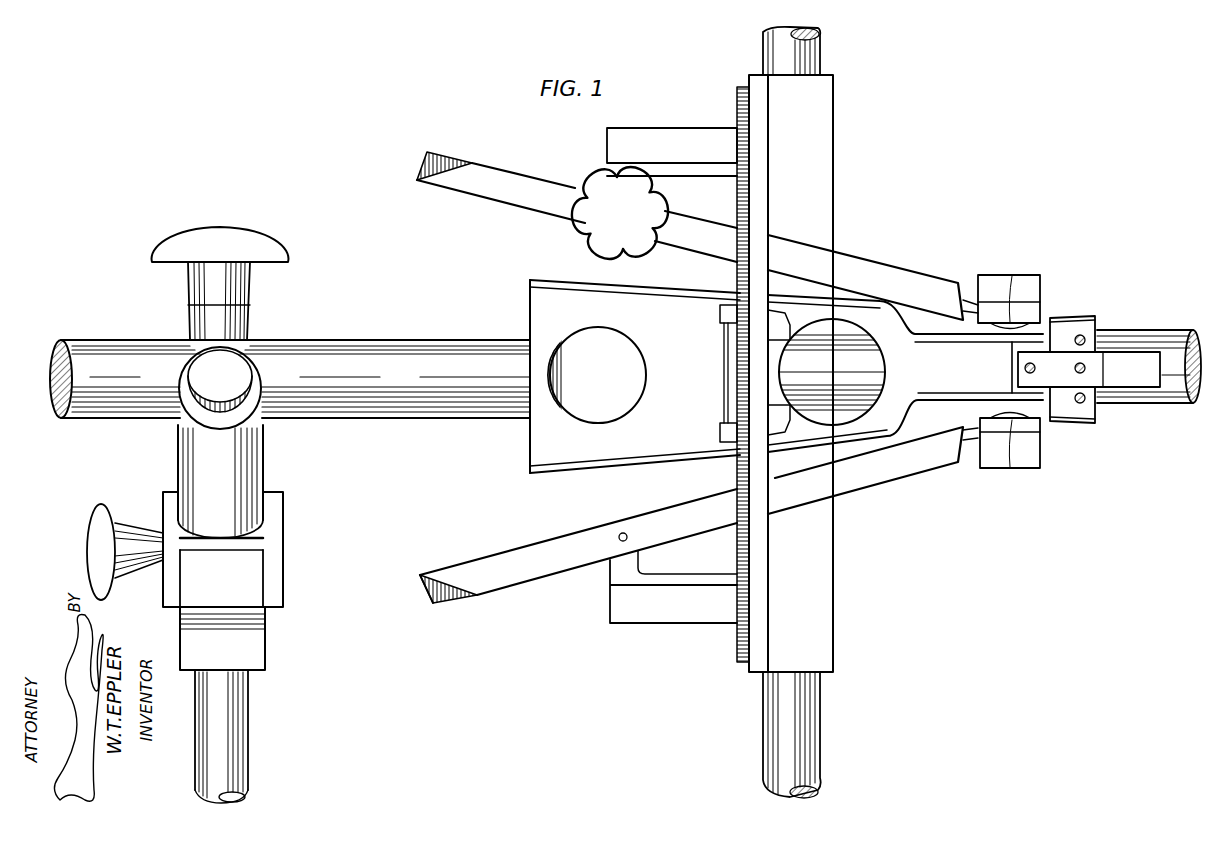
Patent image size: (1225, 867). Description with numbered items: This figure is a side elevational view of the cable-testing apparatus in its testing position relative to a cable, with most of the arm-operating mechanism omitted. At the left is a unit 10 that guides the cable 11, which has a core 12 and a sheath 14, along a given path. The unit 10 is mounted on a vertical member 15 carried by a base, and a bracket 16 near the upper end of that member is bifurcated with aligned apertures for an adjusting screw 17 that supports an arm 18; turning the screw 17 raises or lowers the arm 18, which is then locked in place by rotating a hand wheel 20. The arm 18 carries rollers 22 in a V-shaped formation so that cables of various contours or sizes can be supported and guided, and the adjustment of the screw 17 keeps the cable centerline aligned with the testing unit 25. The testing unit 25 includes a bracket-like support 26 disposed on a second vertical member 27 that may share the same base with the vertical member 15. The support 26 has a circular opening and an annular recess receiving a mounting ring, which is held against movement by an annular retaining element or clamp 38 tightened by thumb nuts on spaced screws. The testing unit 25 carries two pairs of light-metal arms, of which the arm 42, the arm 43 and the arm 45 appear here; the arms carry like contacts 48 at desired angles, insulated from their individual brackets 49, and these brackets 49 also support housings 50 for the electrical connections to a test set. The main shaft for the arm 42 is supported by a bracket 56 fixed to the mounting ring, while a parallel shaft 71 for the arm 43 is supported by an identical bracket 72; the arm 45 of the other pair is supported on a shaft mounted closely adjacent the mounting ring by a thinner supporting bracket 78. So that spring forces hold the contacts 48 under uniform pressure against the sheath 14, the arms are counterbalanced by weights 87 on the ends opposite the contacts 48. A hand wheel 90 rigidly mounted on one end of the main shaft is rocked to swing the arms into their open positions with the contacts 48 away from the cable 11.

The unit 10 is at (140, 257).
The cable 11 is at (352, 334).
The core 12 is at (62, 358).
The sheath 14 is at (133, 347).
The vertical member 15 is at (238, 755).
The bracket 16 is at (255, 653).
The adjusting screw 17 is at (237, 325).
The arm 18 is at (250, 572).
The hand wheel 20 is at (103, 512).
The rollers 22 is at (243, 473).
The testing unit 25 is at (864, 167).
The bracket-like support 26 is at (758, 85).
The vertical member 27 is at (810, 52).
The annular retaining element or clamp 38 is at (736, 122).
The arm 42 is at (482, 197).
The arm 43 is at (462, 562).
The arm 45 is at (530, 316).
The contacts 48 is at (1010, 322).
The brackets 49 is at (972, 298).
The housings 50 is at (1030, 292).
The bracket 56 is at (640, 134).
The shaft 71 is at (623, 532).
The bracket 72 is at (657, 613).
The supporting brackets 78 is at (720, 378).
The weights 87 is at (458, 164).
The hand wheel 90 is at (598, 176).